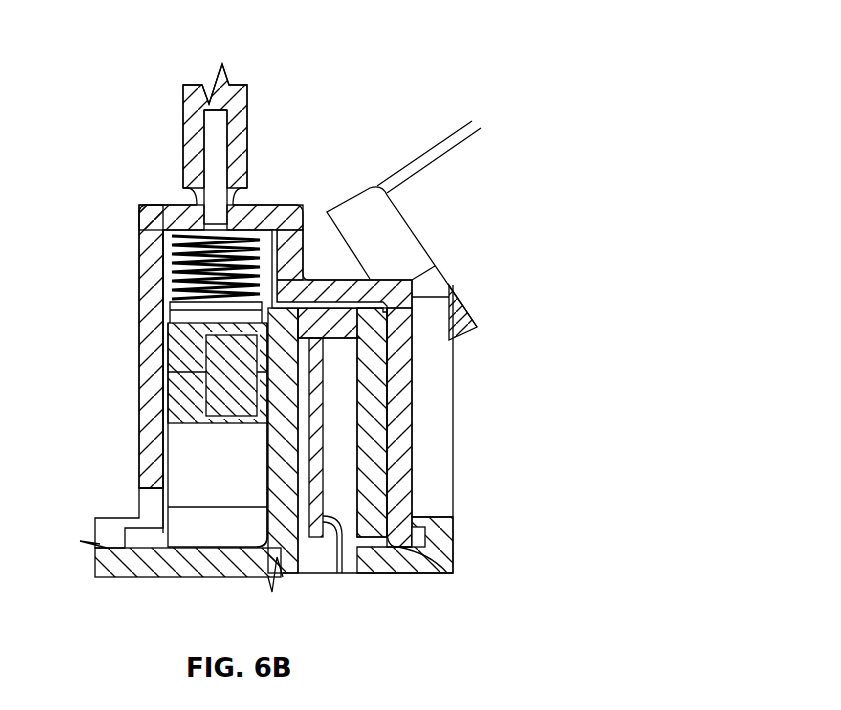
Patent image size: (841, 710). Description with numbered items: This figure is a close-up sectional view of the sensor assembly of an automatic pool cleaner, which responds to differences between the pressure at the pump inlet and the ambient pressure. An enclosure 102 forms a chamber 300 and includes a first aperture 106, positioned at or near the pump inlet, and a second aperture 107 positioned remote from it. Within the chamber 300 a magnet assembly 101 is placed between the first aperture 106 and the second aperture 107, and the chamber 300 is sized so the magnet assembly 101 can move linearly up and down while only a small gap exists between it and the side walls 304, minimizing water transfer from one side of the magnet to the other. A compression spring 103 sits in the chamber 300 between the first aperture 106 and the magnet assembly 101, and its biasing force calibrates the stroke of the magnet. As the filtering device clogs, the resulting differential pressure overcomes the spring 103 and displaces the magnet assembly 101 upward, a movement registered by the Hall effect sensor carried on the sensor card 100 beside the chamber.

The sensor card 100 is at (343, 433).
The magnet assembly 101 is at (236, 440).
The enclosure 102 is at (152, 383).
The spring 103 is at (245, 240).
The first aperture 106 is at (206, 103).
The second aperture 107 is at (152, 513).
The chamber 300 is at (183, 463).
The side walls 304 is at (267, 490).